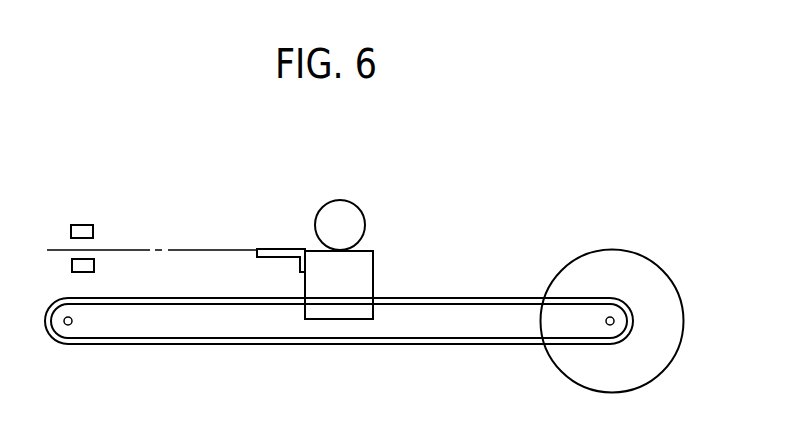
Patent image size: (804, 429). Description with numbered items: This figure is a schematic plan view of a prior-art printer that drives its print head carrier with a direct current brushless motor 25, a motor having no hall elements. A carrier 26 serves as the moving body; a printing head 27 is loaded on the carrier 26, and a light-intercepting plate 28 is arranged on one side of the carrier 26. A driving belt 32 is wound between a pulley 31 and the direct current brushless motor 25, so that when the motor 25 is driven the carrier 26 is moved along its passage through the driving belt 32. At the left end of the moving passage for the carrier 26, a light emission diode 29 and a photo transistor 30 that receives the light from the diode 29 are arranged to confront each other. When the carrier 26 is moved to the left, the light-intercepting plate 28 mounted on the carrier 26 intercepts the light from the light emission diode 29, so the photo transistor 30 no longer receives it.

The direct current brushless motor 25 is at (592, 258).
The carrier 26 is at (375, 270).
The printing head 27 is at (356, 220).
The light-intercepting plate 28 is at (278, 249).
The light emission diode 29 is at (80, 224).
The photo transistor 30 is at (72, 266).
The pulley 31 is at (67, 333).
The driving belt 32 is at (155, 347).